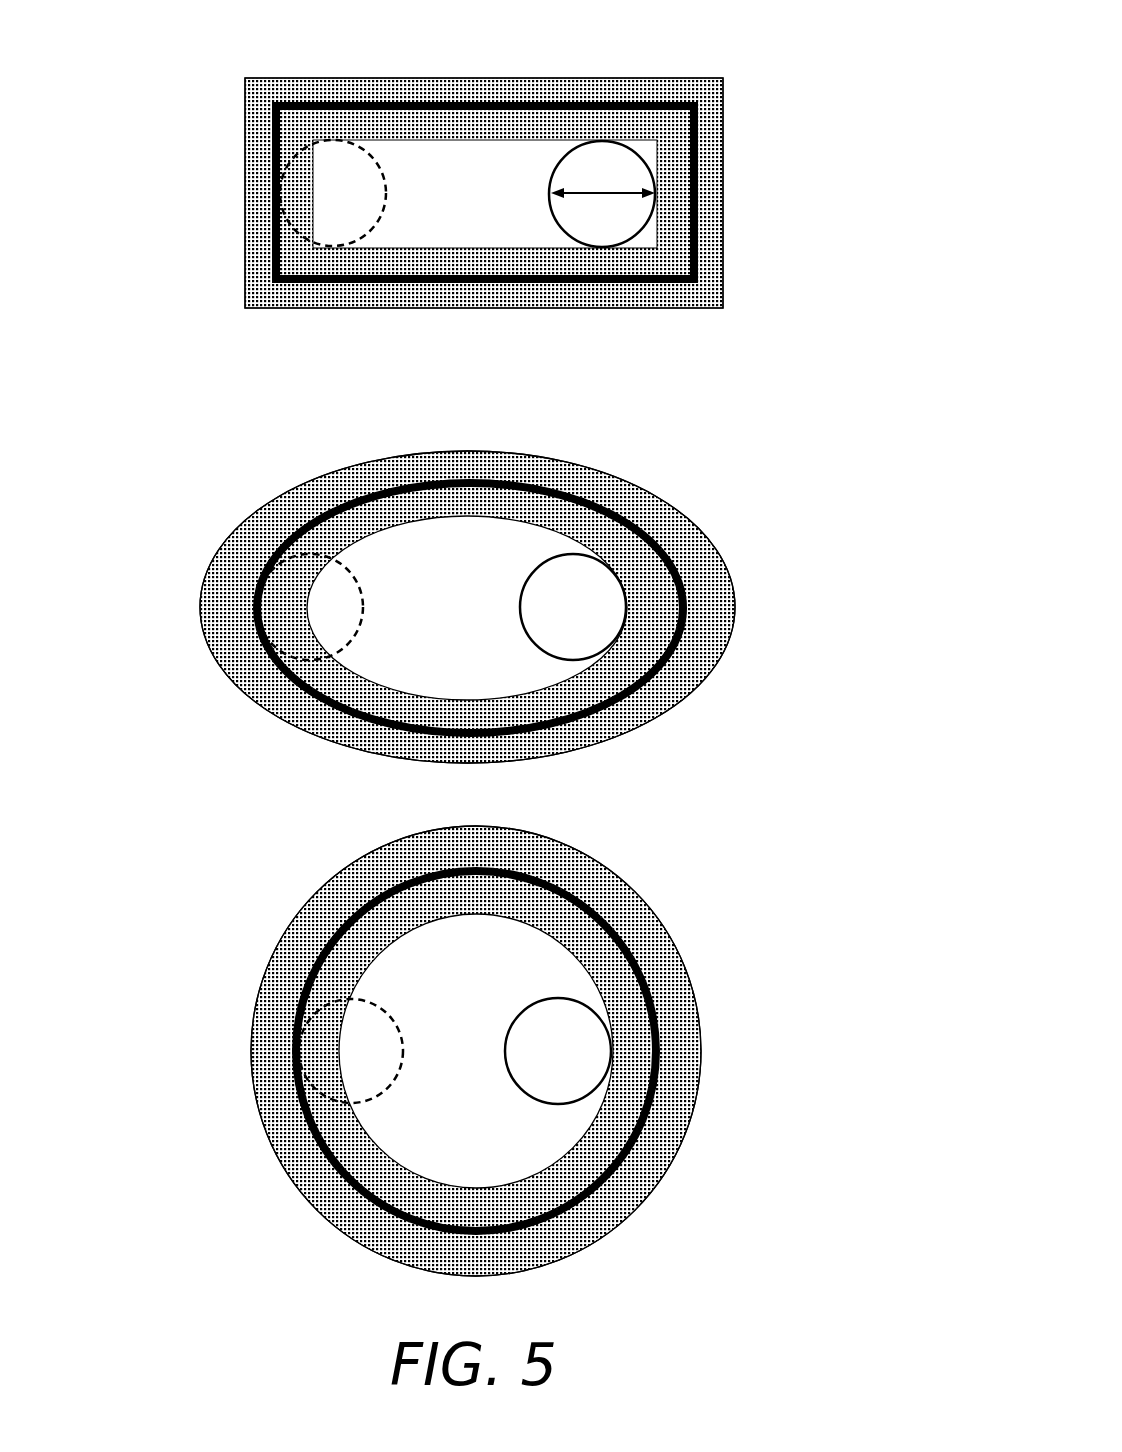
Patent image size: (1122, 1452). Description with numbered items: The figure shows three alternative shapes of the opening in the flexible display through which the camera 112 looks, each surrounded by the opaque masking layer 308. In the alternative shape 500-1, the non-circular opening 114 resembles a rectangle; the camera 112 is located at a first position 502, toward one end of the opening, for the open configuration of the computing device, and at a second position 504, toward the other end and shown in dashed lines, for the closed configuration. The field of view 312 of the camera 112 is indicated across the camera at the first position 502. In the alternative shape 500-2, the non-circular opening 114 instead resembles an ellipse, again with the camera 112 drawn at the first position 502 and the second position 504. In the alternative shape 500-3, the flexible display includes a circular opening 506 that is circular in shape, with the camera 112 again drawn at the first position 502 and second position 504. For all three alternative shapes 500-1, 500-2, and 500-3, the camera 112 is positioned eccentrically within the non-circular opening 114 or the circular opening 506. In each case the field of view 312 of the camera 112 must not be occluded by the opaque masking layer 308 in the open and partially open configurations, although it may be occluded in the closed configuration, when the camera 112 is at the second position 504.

The alternative shape 500-1 is at (175, 104).
The alternative shape 500-2 is at (175, 495).
The alternative shape 500-3 is at (175, 885).
The non-circular opening 114 is at (337, 502).
The opaque masking layer 308 is at (508, 77).
The camera 112 is at (477, 1116).
The field of view 312 is at (604, 192).
The second position 504 is at (303, 1259).
The first position 502 is at (602, 258).
The circular opening 506 is at (653, 996).